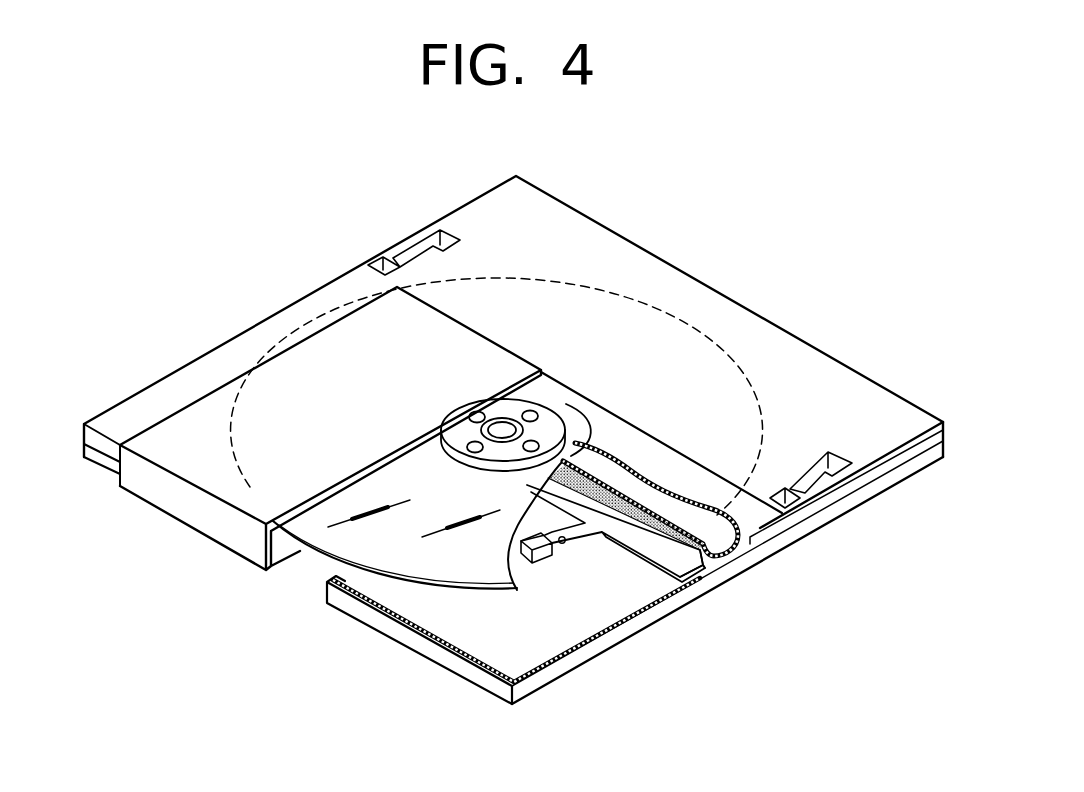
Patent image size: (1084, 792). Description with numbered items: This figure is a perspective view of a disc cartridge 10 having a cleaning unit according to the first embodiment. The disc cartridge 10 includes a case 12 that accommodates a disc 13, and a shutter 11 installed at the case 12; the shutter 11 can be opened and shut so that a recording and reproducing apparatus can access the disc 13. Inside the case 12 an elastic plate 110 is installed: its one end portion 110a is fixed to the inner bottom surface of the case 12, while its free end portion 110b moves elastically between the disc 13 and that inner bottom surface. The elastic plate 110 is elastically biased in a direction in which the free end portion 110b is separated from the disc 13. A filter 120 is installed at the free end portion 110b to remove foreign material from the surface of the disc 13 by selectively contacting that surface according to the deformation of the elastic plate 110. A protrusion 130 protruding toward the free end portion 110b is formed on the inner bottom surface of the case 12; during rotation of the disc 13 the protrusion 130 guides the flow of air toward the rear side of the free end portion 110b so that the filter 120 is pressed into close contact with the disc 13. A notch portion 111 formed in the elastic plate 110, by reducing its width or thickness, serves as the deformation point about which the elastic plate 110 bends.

The disc cartridge 10 is at (779, 687).
The shutter 11 is at (188, 512).
The case 12 is at (453, 660).
The disc 13 is at (325, 538).
The elastic plate 110 is at (595, 543).
The one end portion 110a is at (521, 565).
The free end portion 110b is at (690, 578).
The notch portion 111 is at (563, 546).
The filter 120 is at (723, 568).
The protrusion 130 is at (704, 574).